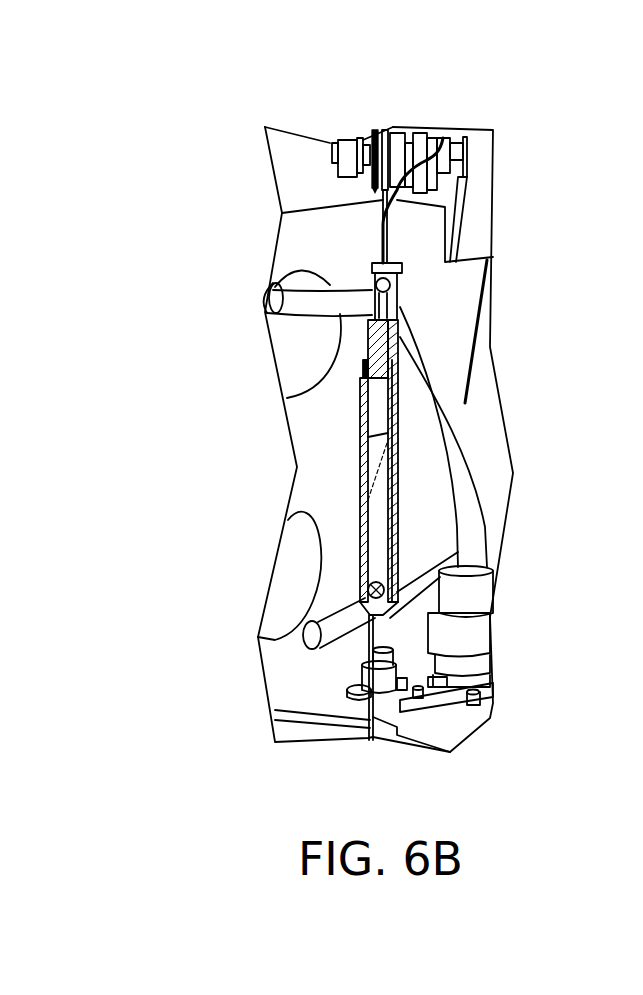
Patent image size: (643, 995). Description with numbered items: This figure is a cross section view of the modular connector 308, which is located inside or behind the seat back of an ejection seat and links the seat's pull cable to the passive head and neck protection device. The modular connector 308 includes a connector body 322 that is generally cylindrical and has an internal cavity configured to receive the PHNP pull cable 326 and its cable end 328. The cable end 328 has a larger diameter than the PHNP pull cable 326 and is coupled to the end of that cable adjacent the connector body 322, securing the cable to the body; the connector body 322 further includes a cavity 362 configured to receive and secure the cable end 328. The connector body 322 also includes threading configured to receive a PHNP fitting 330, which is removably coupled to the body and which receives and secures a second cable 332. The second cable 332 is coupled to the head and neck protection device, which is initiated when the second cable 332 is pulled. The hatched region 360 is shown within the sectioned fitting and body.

The modular connector 308 is at (360, 100).
The second cable 332 is at (443, 138).
The PHNP fitting 330 is at (397, 340).
The hatched block 360 is at (393, 417).
The cavity 362 is at (380, 550).
The cable end 328 is at (372, 590).
The connector body 322 is at (395, 520).
The PHNP pull cable 326 is at (420, 683).